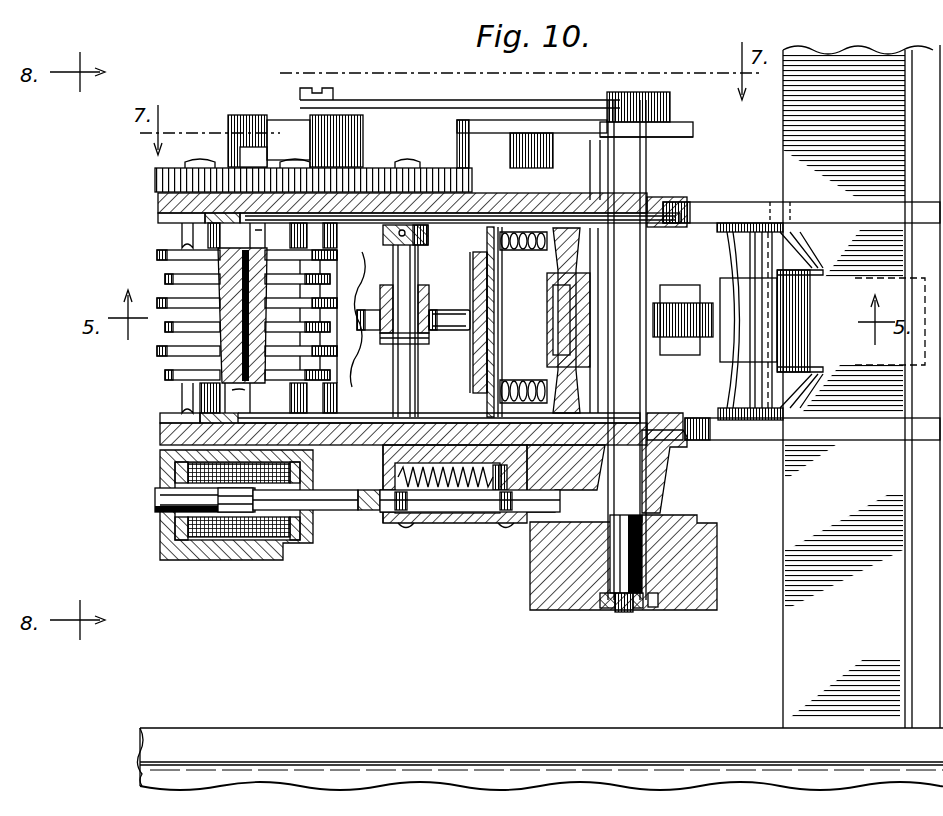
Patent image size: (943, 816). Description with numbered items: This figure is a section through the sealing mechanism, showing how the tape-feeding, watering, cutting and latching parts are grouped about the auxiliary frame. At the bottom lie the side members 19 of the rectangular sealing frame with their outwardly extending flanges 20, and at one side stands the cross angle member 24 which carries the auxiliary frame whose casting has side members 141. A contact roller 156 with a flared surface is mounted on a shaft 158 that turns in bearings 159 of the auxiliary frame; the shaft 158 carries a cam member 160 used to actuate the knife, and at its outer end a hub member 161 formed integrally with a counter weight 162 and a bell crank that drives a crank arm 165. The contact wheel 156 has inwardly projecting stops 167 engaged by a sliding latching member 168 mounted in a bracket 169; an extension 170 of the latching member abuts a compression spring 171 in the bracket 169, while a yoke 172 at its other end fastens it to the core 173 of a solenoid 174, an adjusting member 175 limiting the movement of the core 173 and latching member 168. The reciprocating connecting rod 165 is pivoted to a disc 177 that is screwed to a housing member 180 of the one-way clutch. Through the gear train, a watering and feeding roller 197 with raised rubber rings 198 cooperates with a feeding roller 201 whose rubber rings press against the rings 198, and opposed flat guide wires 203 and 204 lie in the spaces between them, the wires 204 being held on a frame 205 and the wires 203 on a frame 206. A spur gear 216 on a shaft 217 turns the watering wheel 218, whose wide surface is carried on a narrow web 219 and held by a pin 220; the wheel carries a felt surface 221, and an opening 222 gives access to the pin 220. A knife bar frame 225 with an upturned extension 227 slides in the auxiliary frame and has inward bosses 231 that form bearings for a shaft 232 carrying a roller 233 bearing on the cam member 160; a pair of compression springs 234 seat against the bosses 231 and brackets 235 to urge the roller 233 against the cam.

The side members 19 is at (630, 746).
The outwardly extending flanges 20 is at (140, 779).
The cross angle member 24 is at (860, 649).
The side members 141 is at (710, 204).
The contact roller 156 is at (712, 576).
The shaft 158 is at (640, 392).
The bearings 159 is at (668, 215).
The cam member 160 is at (673, 313).
The hub member 161 is at (652, 166).
The counter weight 162 is at (512, 156).
The crank arm 165 is at (385, 108).
The inwardly projecting stops 167 is at (656, 497).
The sliding latching member 168 is at (532, 494).
The bracket 169 is at (392, 457).
The extension 170 is at (506, 469).
The compression spring 171 is at (434, 512).
The yoke 172 is at (360, 501).
The core 173 is at (345, 511).
The solenoid 174 is at (246, 527).
The adjusting member 175 is at (175, 493).
The disc 177 is at (240, 130).
The housing member 180 is at (256, 130).
The watering and feeding roller 197 is at (336, 381).
The raised rings 198 is at (375, 381).
The feeding roller 201 is at (160, 245).
The guide wires 203 is at (240, 272).
The guide wires 204 is at (372, 221).
The frame 205 is at (215, 397).
The frame 206 is at (250, 395).
The spur gear 216 is at (437, 172).
The shaft 217 is at (402, 166).
The watering wheel 218 is at (477, 361).
The narrow web 219 is at (448, 318).
The pin 220 is at (383, 345).
The felt surface 221 is at (487, 256).
The opening 222 is at (479, 339).
The knife bar frame 225 is at (383, 236).
The upturned extension 227 is at (158, 210).
The bosses 231 is at (648, 262).
The shaft 232 is at (553, 301).
The roller 233 is at (553, 320).
The compression springs 234 is at (534, 240).
The brackets 235 is at (495, 251).